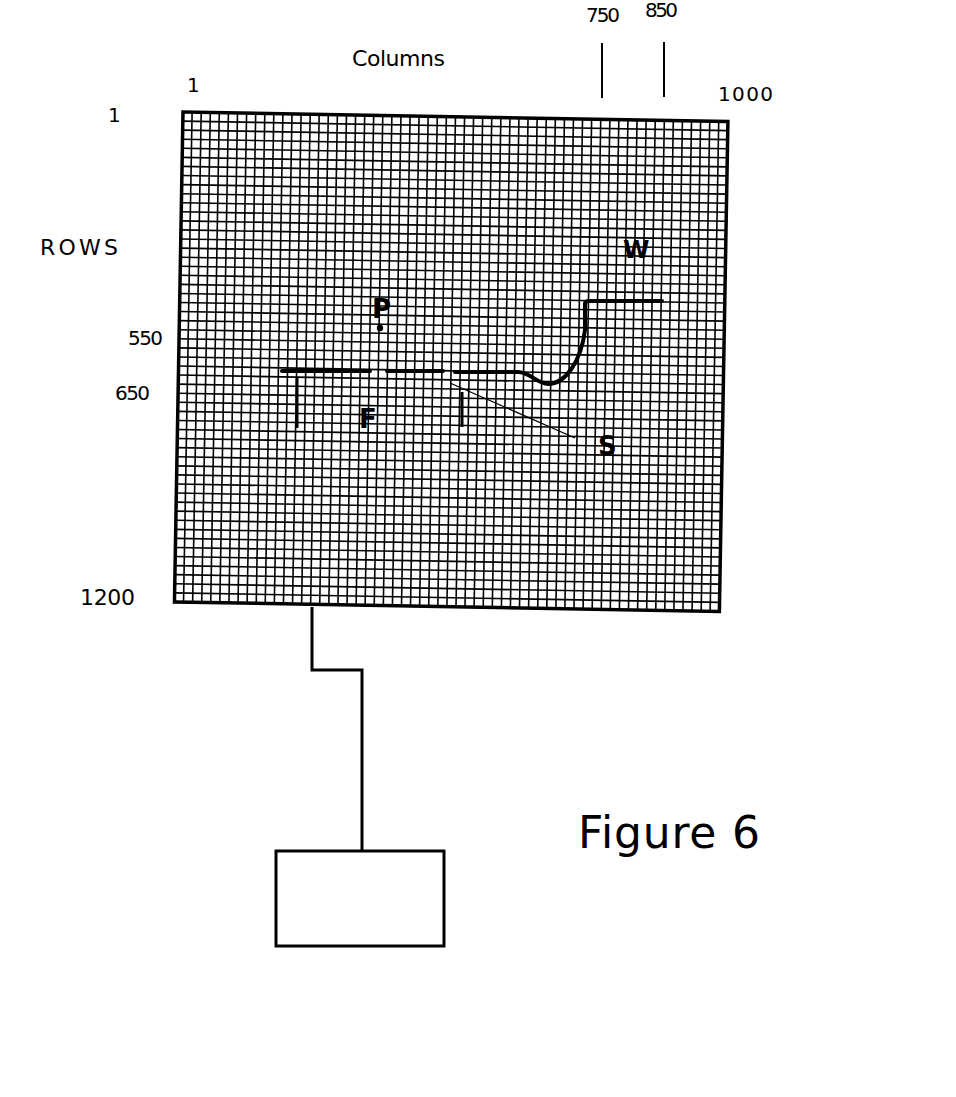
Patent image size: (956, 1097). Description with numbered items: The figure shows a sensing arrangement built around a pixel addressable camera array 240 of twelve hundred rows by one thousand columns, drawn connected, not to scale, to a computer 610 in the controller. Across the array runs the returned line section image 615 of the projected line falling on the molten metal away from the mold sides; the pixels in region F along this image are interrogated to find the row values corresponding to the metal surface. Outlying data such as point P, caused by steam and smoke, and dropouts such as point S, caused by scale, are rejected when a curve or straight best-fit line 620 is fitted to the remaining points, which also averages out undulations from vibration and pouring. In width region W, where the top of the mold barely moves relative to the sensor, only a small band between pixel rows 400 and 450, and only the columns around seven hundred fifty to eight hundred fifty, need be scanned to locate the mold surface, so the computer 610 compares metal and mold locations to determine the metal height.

The array 240 is at (447, 607).
The pixel row 400 is at (740, 293).
The pixel row 450 is at (738, 323).
The computer 610 is at (360, 776).
The returned line section image 615 is at (578, 355).
The line 620 is at (282, 377).